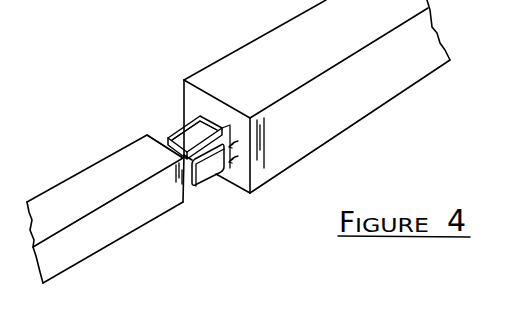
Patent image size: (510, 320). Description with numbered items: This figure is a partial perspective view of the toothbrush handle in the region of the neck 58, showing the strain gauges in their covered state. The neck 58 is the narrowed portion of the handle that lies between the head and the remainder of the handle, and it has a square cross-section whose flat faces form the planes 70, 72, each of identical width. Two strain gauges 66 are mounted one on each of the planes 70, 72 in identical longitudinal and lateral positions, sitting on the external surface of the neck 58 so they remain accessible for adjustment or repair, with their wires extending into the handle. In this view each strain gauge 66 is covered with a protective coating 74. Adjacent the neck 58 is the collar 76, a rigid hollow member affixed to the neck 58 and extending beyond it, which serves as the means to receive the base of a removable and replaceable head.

The neck 58 is at (162, 137).
The strain gauges 66 is at (211, 110).
The plane 70 is at (165, 133).
The plane 72 is at (185, 184).
The protective coating 74 is at (180, 135).
The collar 76 is at (103, 230).